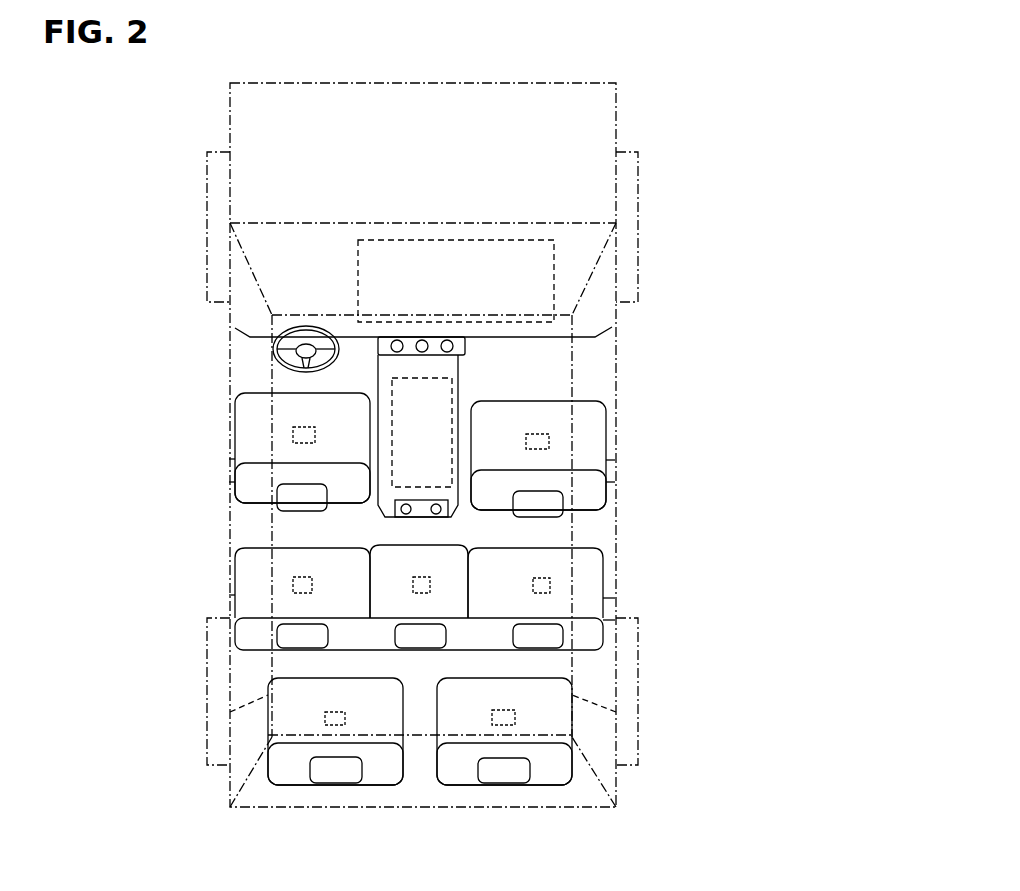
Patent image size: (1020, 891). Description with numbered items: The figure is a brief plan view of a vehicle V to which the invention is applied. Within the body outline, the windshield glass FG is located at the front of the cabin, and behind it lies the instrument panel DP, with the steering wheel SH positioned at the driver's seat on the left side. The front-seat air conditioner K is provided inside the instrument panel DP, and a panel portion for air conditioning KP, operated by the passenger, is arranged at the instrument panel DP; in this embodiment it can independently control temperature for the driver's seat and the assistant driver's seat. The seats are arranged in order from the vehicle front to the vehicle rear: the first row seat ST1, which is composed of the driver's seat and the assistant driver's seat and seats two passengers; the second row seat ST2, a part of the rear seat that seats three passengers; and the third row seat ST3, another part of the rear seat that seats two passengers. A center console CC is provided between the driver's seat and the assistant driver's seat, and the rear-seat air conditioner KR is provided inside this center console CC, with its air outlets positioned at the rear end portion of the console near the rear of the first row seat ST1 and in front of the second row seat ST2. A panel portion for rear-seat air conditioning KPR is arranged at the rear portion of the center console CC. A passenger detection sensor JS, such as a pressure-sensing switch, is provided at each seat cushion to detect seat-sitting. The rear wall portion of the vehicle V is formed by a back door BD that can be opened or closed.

The vehicle V is at (603, 37).
The back door BD is at (417, 767).
The windshield glass FG is at (313, 247).
The front-seat air conditioner K is at (426, 276).
The instrument panel DP is at (550, 337).
The steering wheel SH is at (300, 329).
The panel portion for air conditioning KP is at (436, 340).
The center console CC is at (462, 370).
The rear-seat air conditioner KR is at (420, 442).
The panel portion for rear-seat air conditioning KPR is at (417, 510).
The first row seat ST1 is at (591, 423).
The second row seat ST2 is at (591, 573).
The third row seat ST3 is at (552, 713).
The passenger detection sensor JS is at (298, 428).